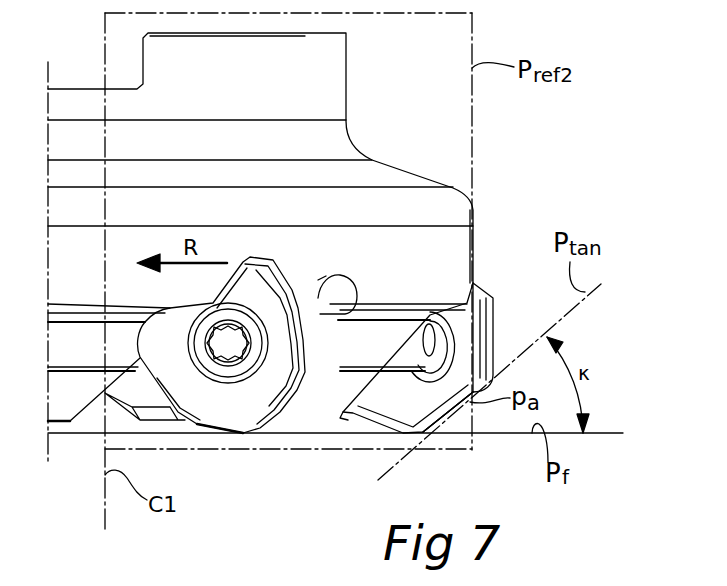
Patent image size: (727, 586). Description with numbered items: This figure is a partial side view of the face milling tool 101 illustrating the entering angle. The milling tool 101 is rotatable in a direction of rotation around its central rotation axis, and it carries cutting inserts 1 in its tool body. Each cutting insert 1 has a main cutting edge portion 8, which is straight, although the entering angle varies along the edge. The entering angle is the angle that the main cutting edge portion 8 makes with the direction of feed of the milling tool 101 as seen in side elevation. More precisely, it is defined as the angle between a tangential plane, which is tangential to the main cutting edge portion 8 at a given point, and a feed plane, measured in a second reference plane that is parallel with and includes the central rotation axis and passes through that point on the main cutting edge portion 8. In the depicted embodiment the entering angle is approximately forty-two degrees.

The face milling tool 101 is at (377, 152).
The cutting insert 1 is at (478, 302).
The main cutting edge portion 8 is at (452, 434).